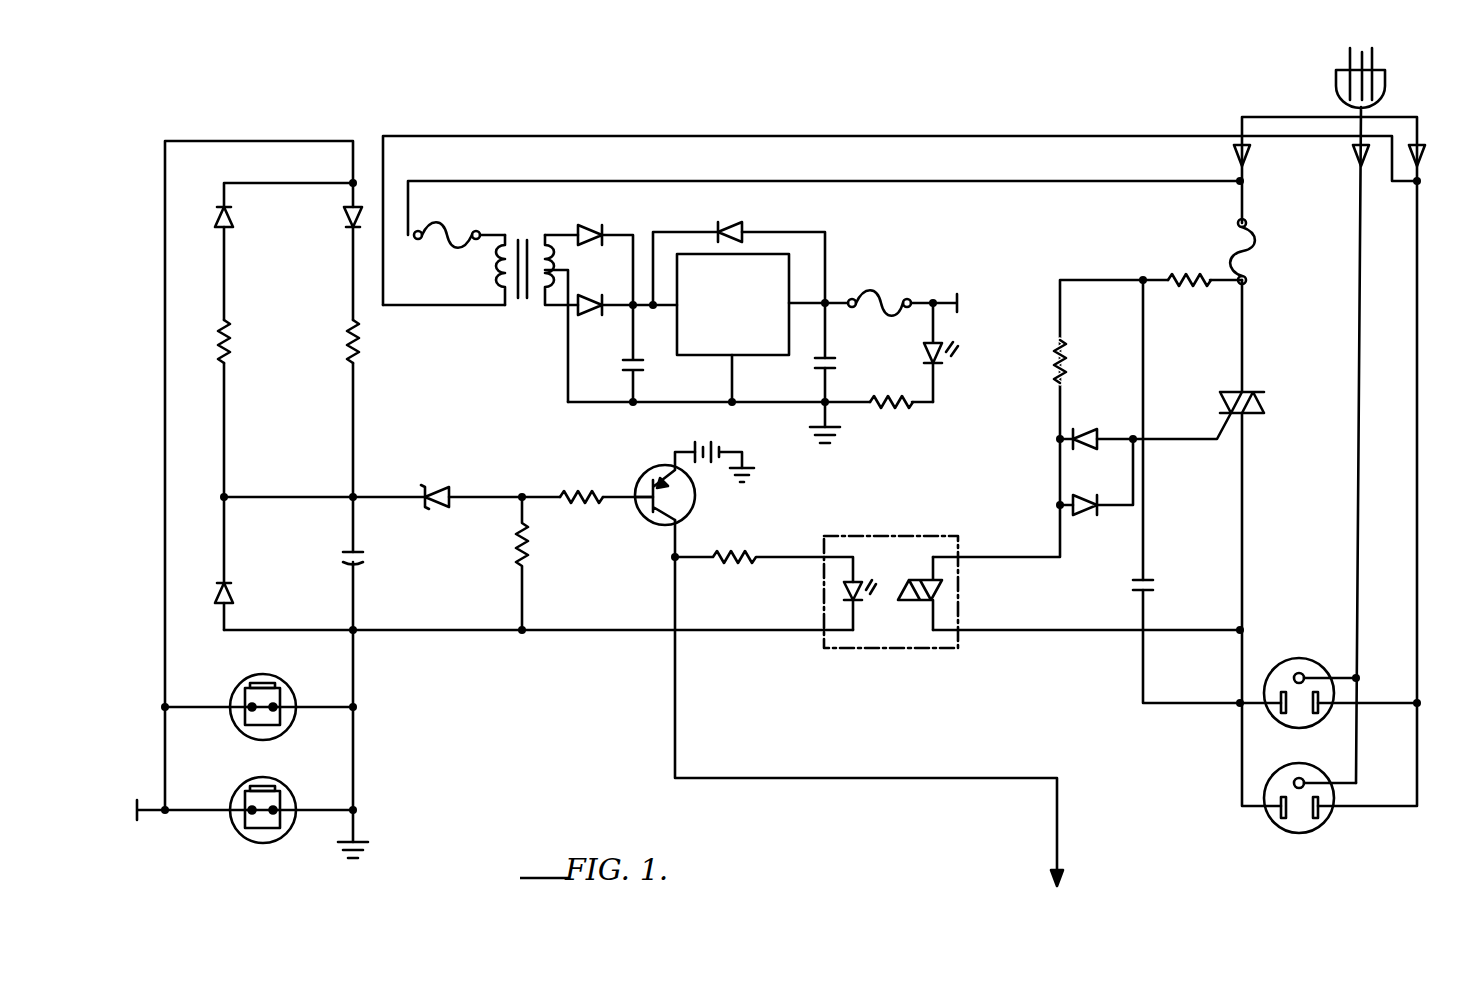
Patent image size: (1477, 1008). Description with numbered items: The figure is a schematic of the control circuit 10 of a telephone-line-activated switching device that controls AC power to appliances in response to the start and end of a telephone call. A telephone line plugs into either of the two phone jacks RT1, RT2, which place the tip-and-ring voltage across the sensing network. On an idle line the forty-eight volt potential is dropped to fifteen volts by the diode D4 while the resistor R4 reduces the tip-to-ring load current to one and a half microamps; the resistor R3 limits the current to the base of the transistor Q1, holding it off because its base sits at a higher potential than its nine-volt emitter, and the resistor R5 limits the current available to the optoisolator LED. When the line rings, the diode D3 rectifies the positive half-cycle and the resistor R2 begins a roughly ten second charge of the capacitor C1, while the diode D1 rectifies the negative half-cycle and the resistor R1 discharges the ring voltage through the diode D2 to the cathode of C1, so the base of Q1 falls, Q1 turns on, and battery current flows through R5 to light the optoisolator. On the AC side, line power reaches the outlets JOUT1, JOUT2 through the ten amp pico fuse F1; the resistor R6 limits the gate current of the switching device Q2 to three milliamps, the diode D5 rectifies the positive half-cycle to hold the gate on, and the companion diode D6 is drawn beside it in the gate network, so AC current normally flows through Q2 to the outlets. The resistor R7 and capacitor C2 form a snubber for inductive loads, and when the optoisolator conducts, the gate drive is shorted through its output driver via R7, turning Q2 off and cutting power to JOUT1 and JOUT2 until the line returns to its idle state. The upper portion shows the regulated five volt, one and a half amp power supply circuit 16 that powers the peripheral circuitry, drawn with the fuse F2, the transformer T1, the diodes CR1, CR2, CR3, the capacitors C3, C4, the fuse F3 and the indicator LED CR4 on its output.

The control circuit 10 is at (792, 483).
The power supply circuit 16 is at (855, 322).
The diode D1 is at (206, 219).
The diode D2 is at (249, 595).
The diode D3 is at (337, 219).
The diode D4 is at (463, 483).
The diode D5 is at (1098, 440).
The diode 1N4004 D6 is at (1087, 520).
The resistor R1 is at (231, 344).
The resistor R2 is at (364, 341).
The resistor R3 is at (584, 496).
The resistor R4 is at (532, 563).
The resistor R5 is at (764, 560).
The resistor R6 is at (1067, 362).
The resistor R7 is at (1187, 289).
The capacitor C1 is at (368, 566).
The capacitor C2 is at (1150, 582).
The capacitor 4700uF C3 is at (651, 353).
The capacitor 0.1uF C4 is at (852, 380).
The rectifier diode 1N5400 CR1 is at (592, 245).
The rectifier diode 1N5400 CR2 is at (586, 319).
The protection diode CR3 is at (730, 220).
The LED TIL220 CR4 is at (937, 357).
The fuse 10A F1 is at (1264, 251).
The fuse 1.5A F2 is at (458, 238).
The fuse 1.5A F3 is at (902, 306).
The transformer 12.6V CT T1 is at (533, 264).
The transistor Q1 is at (646, 498).
The gate-controlled AC switch Q2 is at (1267, 462).
The phone jack RT1 is at (263, 692).
The phone jack RT2 is at (263, 798).
The AC power output JOUT1 is at (1292, 680).
The AC power output JOUT2 is at (1292, 785).